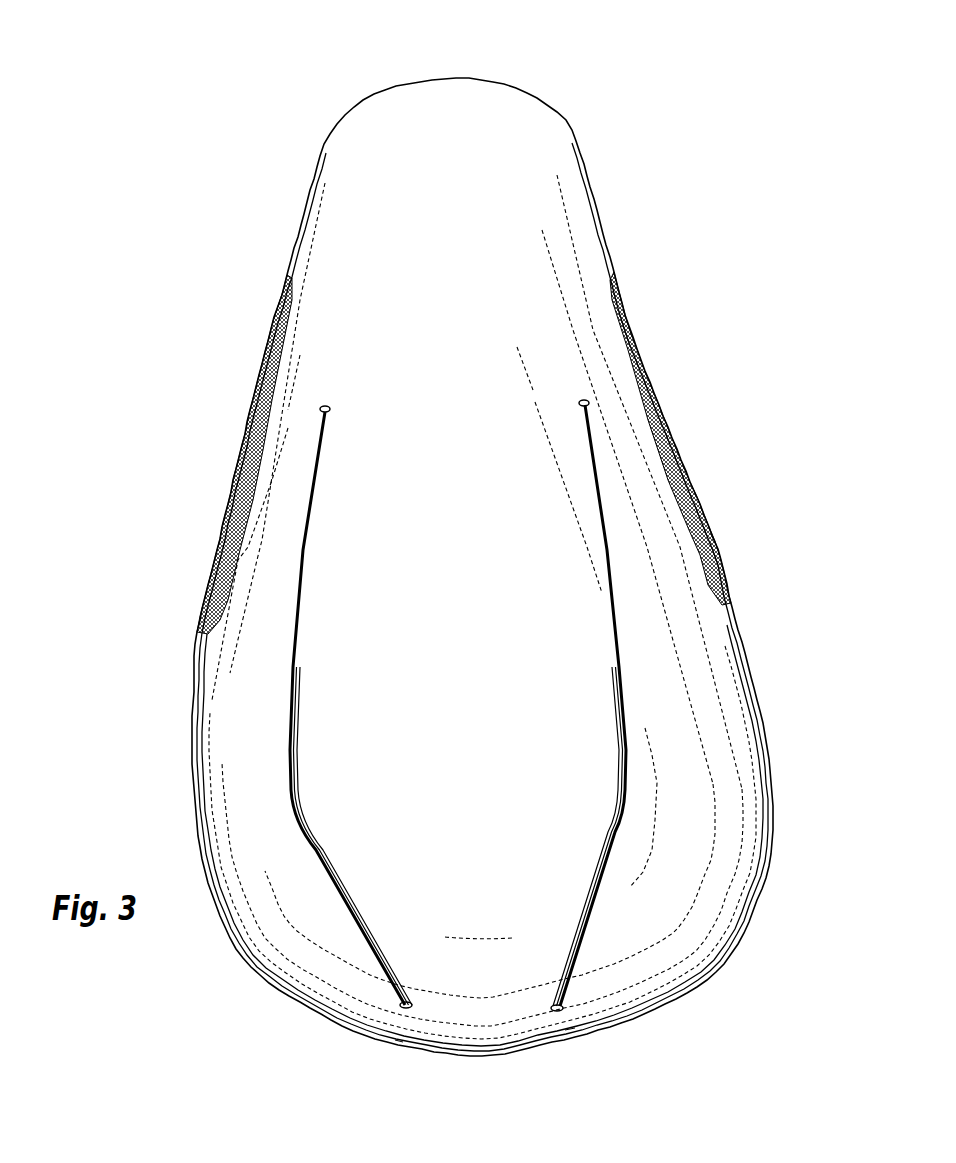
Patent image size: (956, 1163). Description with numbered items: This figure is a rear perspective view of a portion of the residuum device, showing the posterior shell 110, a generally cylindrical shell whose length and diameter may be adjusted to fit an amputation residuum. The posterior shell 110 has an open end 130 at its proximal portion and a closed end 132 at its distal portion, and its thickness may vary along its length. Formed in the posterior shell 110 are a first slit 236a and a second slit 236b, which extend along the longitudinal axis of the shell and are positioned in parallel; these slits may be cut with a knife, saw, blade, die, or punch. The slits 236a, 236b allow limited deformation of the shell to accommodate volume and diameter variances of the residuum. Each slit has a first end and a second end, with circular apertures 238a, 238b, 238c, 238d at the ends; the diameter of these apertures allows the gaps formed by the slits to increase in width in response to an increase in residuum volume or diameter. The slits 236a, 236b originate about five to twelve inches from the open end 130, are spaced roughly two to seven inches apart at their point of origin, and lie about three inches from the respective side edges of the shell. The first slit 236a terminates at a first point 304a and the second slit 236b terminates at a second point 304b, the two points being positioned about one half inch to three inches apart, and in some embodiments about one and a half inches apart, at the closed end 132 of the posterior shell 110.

The posterior shell 110 is at (562, 155).
The open end 130 is at (409, 80).
The closed end 132 is at (337, 985).
The first slit 236a is at (600, 487).
The second slit 236b is at (303, 525).
The circular aperture 238a is at (577, 394).
The circular aperture 238b is at (553, 997).
The circular aperture 238c is at (325, 395).
The circular aperture 238d is at (408, 992).
The first point 304a is at (562, 1017).
The second point 304b is at (407, 1012).